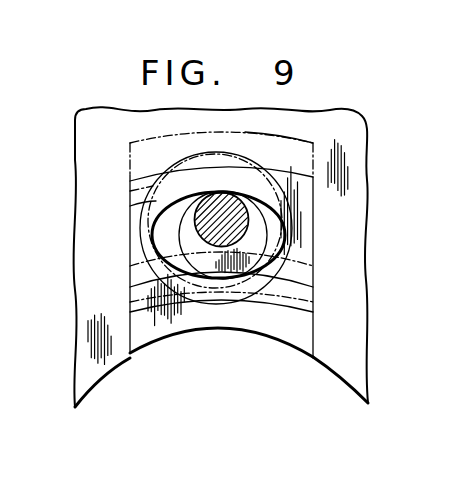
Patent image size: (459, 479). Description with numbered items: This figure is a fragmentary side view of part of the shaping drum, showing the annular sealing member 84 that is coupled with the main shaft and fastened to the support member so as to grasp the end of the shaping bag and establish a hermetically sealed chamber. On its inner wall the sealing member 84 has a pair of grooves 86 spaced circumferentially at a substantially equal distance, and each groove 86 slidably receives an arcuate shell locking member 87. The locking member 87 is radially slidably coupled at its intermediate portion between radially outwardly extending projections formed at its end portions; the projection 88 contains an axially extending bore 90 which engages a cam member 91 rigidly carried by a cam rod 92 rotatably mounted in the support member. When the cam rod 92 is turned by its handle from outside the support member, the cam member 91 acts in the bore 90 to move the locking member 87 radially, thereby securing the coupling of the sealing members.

The annular sealing member 84 is at (339, 293).
The groove 86 is at (134, 352).
The arcuate shell locking member 87 is at (243, 330).
The radially outwardly extending projection 88 is at (305, 226).
The axially extending bore 90 is at (157, 239).
The cam member 91 is at (132, 288).
The cam rod 92 is at (207, 209).